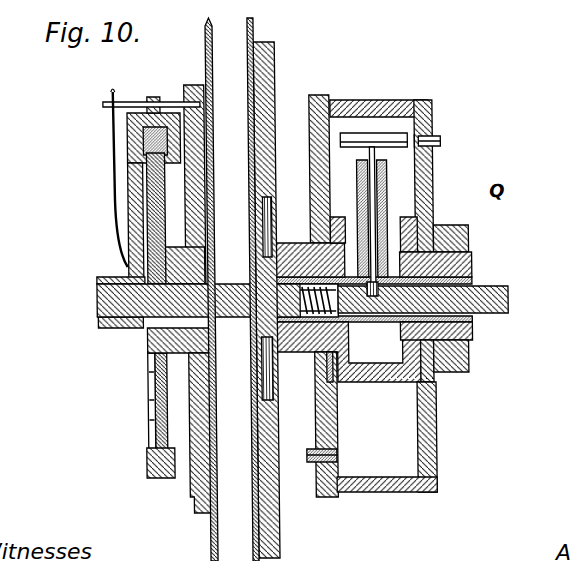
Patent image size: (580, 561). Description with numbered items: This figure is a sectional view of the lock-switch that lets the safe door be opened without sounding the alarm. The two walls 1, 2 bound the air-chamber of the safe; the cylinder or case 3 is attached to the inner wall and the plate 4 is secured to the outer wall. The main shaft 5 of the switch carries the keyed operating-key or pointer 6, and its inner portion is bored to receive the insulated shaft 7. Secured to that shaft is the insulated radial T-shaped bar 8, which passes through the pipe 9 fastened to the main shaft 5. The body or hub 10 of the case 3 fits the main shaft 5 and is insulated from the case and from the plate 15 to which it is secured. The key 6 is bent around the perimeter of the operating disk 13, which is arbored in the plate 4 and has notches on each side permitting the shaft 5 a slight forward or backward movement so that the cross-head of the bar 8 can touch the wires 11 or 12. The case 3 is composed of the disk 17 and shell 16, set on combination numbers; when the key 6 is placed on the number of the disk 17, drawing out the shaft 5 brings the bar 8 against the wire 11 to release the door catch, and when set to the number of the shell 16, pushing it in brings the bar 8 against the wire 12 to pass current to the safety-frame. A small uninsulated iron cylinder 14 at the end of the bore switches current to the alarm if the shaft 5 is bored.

The wall 1 is at (206, 289).
The wall 2 is at (248, 289).
The cylinder or case 3 is at (386, 437).
The plate 4 is at (201, 433).
The main shaft 5 is at (218, 302).
The operating-key or pointer 6 is at (152, 186).
The insulated shaft 7 is at (423, 299).
The insulated radial T-shaped bar 8 is at (373, 137).
The pipe 9 is at (376, 221).
The body or hub 10 is at (348, 352).
The insulated wire 11 is at (318, 459).
The wire 12 is at (436, 144).
The operating disk 13 is at (158, 315).
The uninsulated cylinder of iron 14 is at (304, 300).
The plate 15 is at (271, 300).
The shell 16 is at (432, 437).
The disk 17 is at (331, 424).